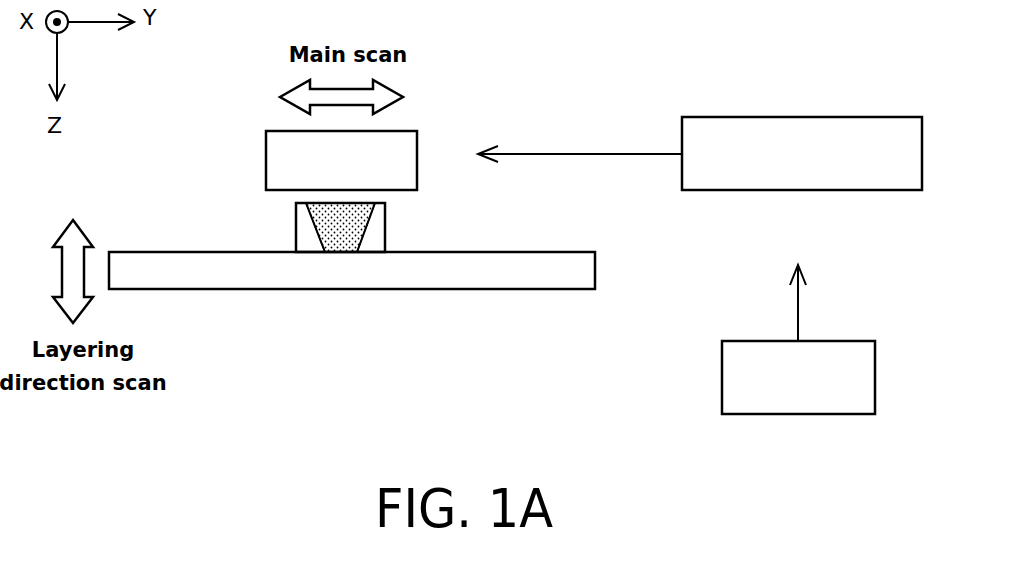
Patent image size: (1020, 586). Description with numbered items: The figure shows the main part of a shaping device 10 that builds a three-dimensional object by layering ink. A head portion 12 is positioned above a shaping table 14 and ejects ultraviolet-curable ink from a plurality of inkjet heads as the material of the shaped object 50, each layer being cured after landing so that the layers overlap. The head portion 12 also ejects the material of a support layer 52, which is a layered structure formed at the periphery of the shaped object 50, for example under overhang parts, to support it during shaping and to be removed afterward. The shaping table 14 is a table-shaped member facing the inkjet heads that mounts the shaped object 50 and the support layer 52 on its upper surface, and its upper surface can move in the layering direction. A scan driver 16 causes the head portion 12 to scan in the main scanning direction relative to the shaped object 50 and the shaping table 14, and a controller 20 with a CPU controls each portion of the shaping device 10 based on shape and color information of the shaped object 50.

The shaping device 10 is at (870, 43).
The head portion 12 is at (266, 158).
The shaping table 14 is at (281, 271).
The scan driver 16 is at (729, 126).
The controller 20 is at (722, 382).
The shaped object 50 is at (342, 243).
The support layer 52 is at (385, 228).